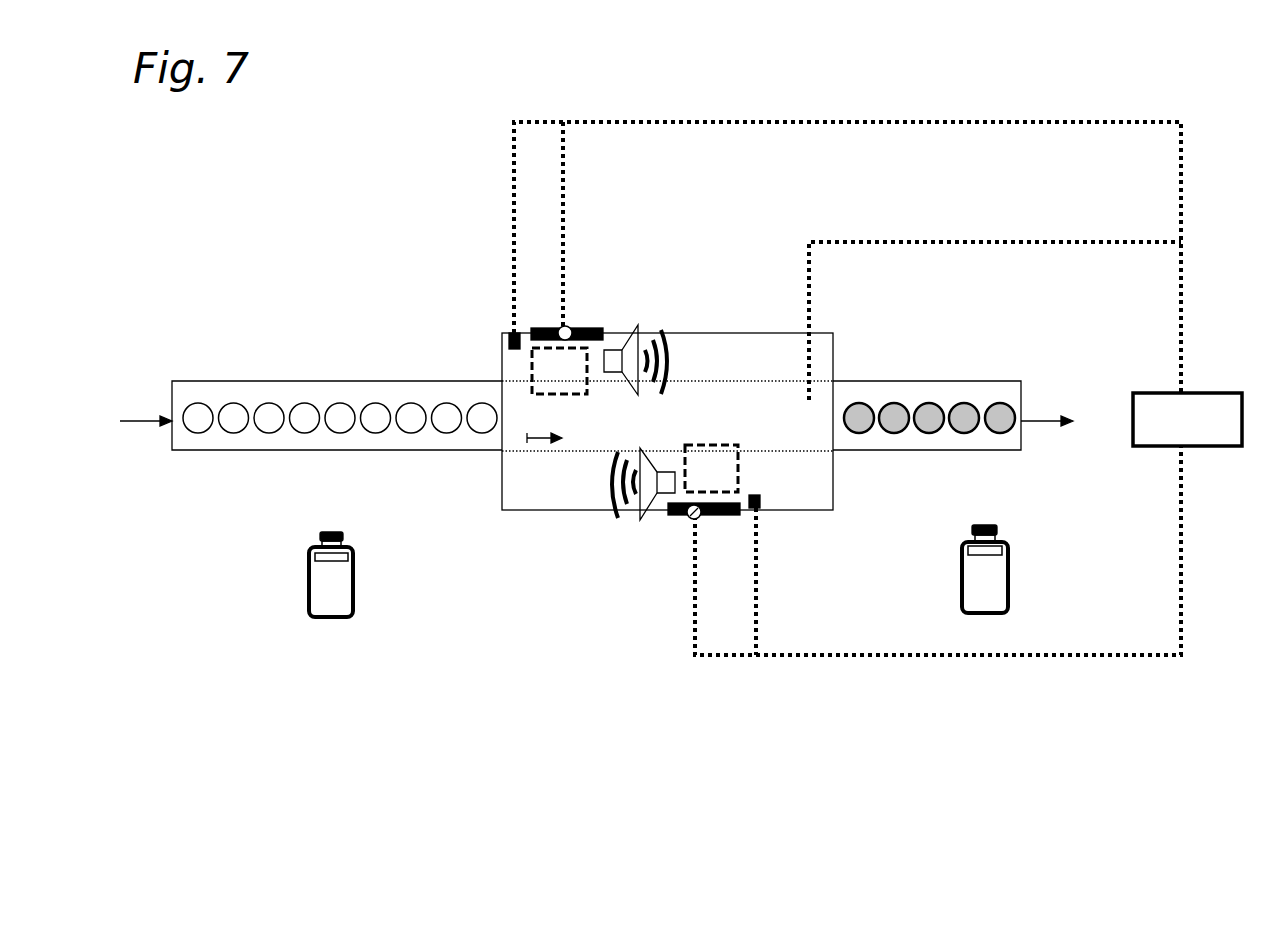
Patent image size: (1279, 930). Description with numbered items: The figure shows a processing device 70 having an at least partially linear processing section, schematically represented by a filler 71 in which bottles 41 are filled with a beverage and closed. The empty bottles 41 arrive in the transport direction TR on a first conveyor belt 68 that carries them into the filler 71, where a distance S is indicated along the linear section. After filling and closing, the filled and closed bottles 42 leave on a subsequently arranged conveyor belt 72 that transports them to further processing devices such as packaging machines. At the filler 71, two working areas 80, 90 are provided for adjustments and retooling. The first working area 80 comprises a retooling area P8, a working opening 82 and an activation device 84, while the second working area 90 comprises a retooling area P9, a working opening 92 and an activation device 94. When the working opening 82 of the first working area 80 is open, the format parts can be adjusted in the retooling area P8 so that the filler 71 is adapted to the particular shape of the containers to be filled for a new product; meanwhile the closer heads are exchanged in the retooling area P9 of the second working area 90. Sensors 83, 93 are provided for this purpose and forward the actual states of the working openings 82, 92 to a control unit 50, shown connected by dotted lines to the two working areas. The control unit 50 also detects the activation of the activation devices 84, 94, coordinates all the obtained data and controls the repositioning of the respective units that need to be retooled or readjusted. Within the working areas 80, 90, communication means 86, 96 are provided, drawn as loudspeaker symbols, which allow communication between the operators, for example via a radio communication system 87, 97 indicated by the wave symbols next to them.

The conveyor belt 68 is at (248, 390).
The conveyor belt 72 is at (938, 393).
The bottle 41 is at (304, 433).
The filled and closed bottle 42 is at (964, 433).
The control unit 50 is at (1172, 432).
The processing device 70 is at (629, 496).
The filler 71 is at (530, 493).
The working area 80 is at (617, 309).
The working opening 82 is at (604, 328).
The sensor 83 is at (565, 326).
The activation device 84 is at (509, 332).
The communication means 86 is at (692, 343).
The radio communication system 87 is at (668, 340).
The working area 90 is at (659, 555).
The working opening 92 is at (684, 517).
The sensor 93 is at (688, 524).
The activation device 94 is at (757, 513).
The communication means 96 is at (600, 504).
The radio communication system 97 is at (610, 512).
The retooling area P8 is at (545, 388).
The retooling area P9 is at (697, 484).
The distance S is at (544, 426).
The transport direction TR is at (156, 416).